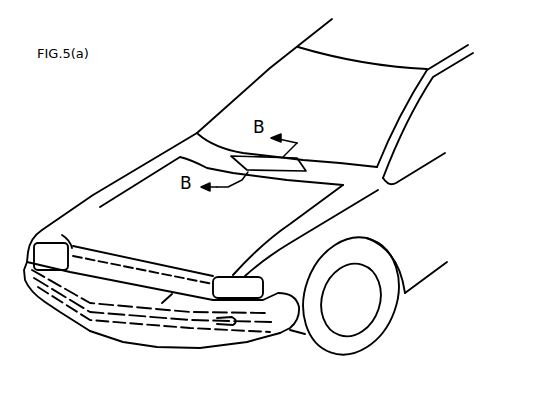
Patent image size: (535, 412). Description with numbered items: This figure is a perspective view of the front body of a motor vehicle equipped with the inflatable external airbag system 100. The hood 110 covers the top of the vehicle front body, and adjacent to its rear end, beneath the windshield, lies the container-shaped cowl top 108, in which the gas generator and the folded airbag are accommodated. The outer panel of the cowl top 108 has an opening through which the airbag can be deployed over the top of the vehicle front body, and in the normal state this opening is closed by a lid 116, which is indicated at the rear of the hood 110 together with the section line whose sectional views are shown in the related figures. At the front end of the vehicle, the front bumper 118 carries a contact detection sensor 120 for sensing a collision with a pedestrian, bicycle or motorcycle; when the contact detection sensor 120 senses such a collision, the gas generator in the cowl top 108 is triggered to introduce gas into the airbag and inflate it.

The inflatable external airbag system 100 is at (249, 161).
The cowl top 108 is at (327, 177).
The lid 116 is at (290, 157).
The hood 110 is at (123, 240).
The contact detection sensor 120 is at (111, 303).
The front bumper 118 is at (140, 336).